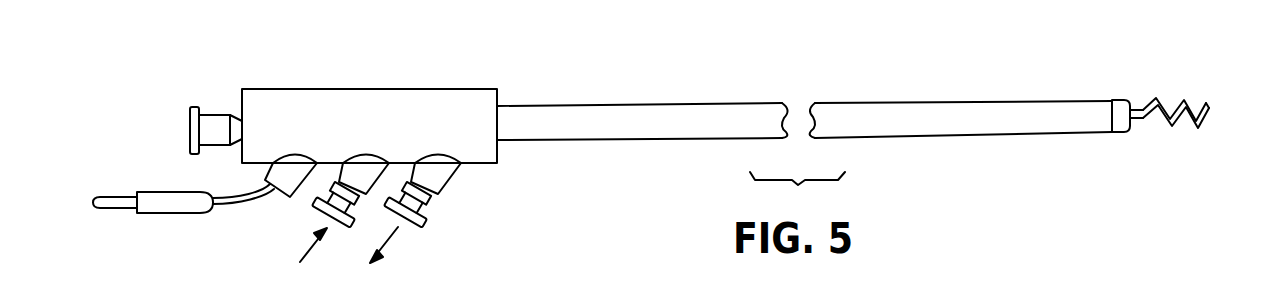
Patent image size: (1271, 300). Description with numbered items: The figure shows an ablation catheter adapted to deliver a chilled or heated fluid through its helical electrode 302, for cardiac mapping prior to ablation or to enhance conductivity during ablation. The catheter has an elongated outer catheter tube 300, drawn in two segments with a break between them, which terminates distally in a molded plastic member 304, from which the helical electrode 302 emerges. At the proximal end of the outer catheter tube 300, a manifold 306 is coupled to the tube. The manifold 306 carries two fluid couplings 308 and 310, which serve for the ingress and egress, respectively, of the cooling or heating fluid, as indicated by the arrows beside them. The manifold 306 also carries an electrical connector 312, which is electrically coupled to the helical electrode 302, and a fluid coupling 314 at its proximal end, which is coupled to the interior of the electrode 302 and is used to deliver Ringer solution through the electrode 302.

The outer catheter tube 300 is at (730, 99).
The helical electrode 302 is at (1160, 98).
The molded plastic member 304 is at (1117, 97).
The manifold 306 is at (460, 86).
The fluid coupling 308 is at (425, 212).
The fluid coupling 310 is at (333, 233).
The electrical connector 312 is at (115, 207).
The fluid coupling 314 is at (189, 128).